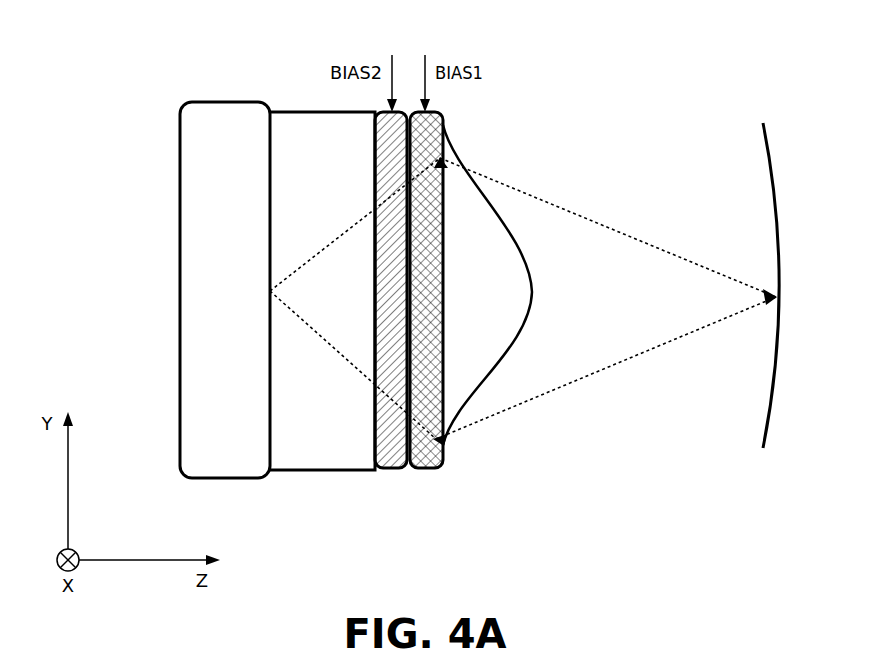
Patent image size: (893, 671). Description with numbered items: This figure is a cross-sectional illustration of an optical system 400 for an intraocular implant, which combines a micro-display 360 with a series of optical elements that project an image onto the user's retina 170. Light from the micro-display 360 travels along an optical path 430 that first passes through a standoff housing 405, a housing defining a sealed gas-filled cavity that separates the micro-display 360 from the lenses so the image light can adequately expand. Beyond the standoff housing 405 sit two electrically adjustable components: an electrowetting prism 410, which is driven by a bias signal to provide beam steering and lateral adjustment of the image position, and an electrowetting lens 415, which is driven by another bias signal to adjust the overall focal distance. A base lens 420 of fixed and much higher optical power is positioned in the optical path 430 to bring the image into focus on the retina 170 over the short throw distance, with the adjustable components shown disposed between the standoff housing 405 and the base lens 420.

The optical system 400 is at (714, 66).
The micro-display 360 is at (211, 286).
The standoff housing 405 is at (308, 163).
The electrowetting prism 410 is at (387, 472).
The electrowetting lens 415 is at (429, 472).
The base lens 420 is at (495, 215).
The optical path 430 is at (603, 225).
The retina 170 is at (775, 382).